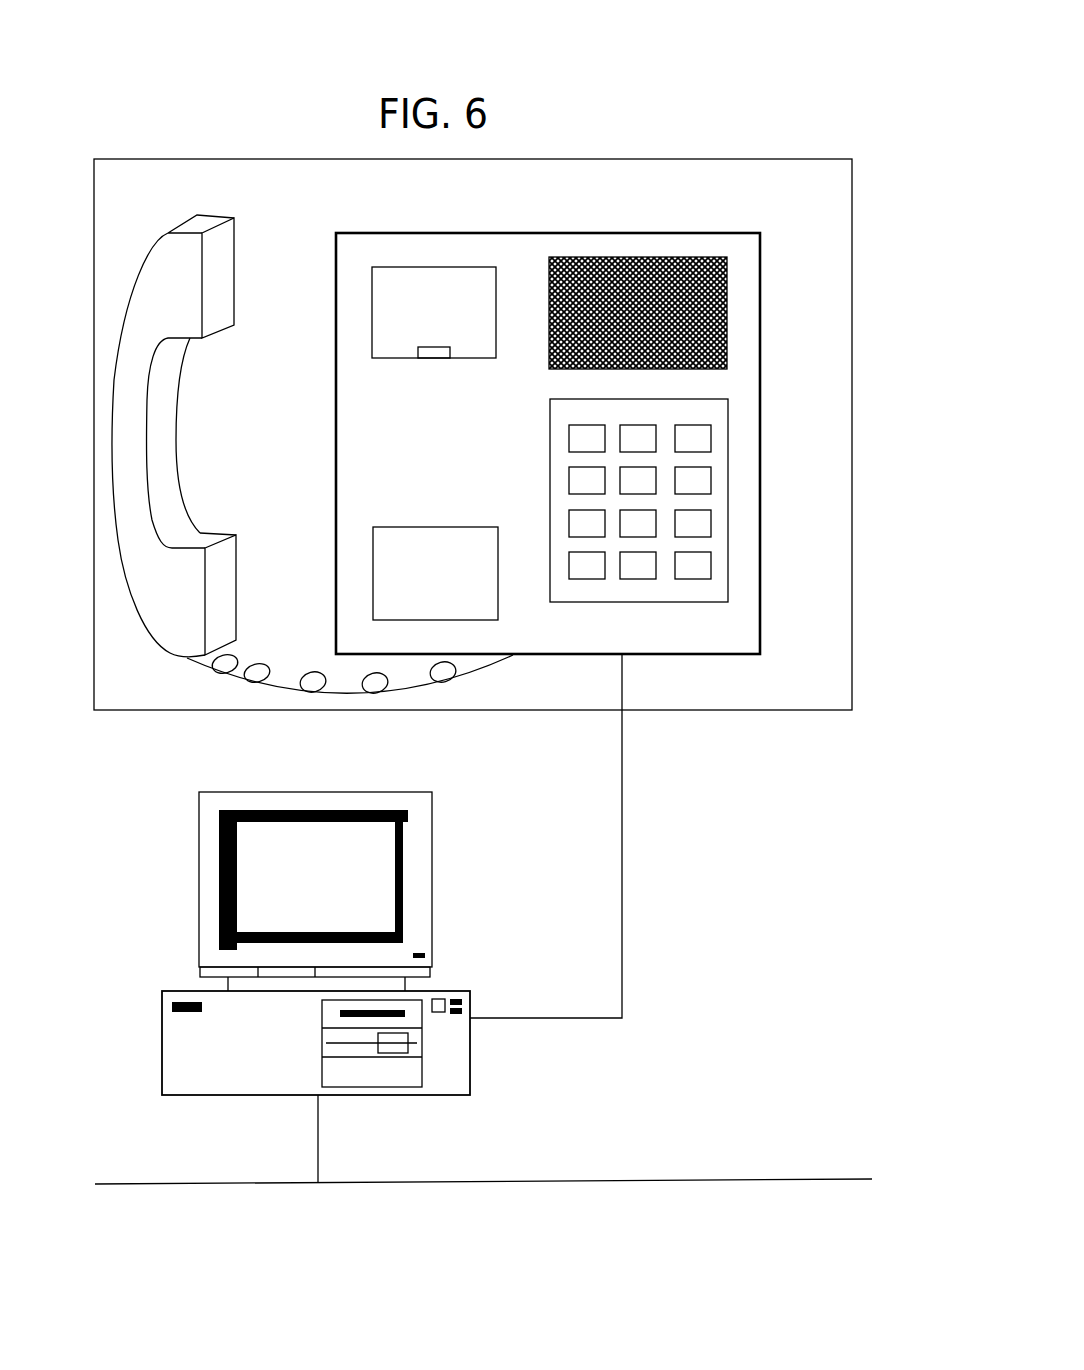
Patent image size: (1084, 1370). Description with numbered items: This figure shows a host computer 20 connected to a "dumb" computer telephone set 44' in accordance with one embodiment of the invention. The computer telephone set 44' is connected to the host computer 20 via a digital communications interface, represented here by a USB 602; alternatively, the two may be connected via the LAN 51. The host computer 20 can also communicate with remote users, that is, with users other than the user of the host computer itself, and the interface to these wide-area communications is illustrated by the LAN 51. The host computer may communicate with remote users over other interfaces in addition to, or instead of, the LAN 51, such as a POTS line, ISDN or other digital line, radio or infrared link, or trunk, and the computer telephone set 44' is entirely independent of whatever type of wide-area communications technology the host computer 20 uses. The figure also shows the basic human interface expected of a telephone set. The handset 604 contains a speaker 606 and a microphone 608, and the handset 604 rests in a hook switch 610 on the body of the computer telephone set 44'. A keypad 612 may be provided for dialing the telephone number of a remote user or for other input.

The handset 604 is at (147, 283).
The speaker 606 is at (218, 273).
The microphone 608 is at (220, 583).
The hook switch 610 is at (433, 347).
The keypad 612 is at (728, 498).
The host computer 20 is at (433, 820).
The computer telephone set 44' is at (512, 478).
The USB 602 is at (623, 908).
The LAN 51 is at (483, 1158).